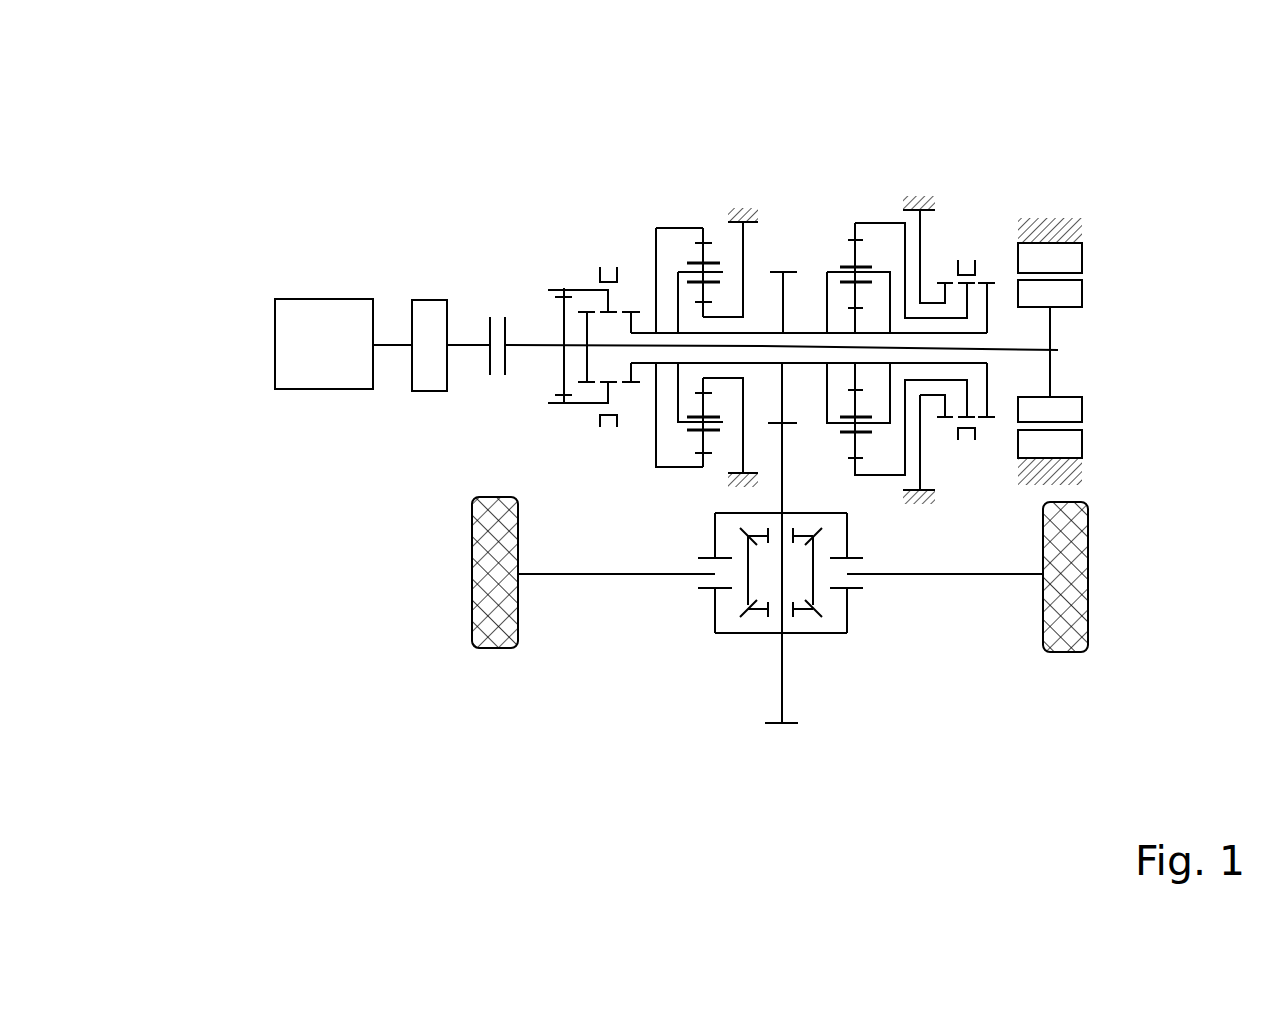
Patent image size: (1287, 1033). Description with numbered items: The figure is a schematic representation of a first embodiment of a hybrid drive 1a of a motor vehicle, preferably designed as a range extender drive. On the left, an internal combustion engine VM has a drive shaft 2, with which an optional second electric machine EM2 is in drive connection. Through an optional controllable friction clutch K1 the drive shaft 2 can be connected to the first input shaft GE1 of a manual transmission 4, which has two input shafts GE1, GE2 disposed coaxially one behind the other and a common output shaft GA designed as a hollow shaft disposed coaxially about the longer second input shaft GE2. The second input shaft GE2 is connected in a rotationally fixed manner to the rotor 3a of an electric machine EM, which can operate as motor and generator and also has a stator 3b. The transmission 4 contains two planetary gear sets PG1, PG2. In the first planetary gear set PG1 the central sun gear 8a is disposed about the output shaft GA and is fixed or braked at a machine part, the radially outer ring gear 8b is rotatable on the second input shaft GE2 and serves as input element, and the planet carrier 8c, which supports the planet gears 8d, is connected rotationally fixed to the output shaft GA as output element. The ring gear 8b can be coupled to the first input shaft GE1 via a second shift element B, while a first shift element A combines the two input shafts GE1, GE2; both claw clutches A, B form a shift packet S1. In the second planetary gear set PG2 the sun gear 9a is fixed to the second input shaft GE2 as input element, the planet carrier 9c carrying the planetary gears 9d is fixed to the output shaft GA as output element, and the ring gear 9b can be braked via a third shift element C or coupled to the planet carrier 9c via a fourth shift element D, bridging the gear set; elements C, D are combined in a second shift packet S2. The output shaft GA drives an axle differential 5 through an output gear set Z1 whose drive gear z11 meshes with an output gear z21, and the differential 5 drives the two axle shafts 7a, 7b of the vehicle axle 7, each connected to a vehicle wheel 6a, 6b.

The hybrid drive 1a is at (273, 156).
The drive shaft 2 is at (386, 340).
The controllable friction clutch K1 is at (490, 317).
The first input shaft GE1 is at (527, 344).
The first shift element A is at (597, 253).
The second shift element B is at (619, 253).
The shift packet S1 is at (607, 442).
The first planetary gear set PG1 is at (667, 425).
The ring gear 8b is at (664, 228).
The planet gears 8d is at (697, 243).
The sun gear 8a is at (728, 380).
The planet carrier 8c is at (687, 422).
The manual transmission 4 is at (639, 168).
The output shaft GA is at (753, 331).
The drive gear z11 is at (790, 272).
The second planetary gear set PG2 is at (901, 425).
The ring gear 9b is at (890, 223).
The planetary gears 9d is at (850, 240).
The planet carrier 9c is at (832, 423).
The sun gear 9a is at (858, 367).
The second input shaft GE2 is at (1002, 348).
The third shift element C is at (955, 249).
The fourth shift element D is at (977, 249).
The second shift packet S2 is at (964, 456).
The electric machine EM is at (1104, 270).
The stator 3b is at (1083, 260).
The rotor 3a is at (1083, 290).
The output gear set Z1 is at (780, 806).
The output gear z21 is at (790, 727).
The axle differential 5 is at (735, 634).
The vehicle axle 7 is at (992, 582).
The axle shaft 7a is at (568, 576).
The axle shaft 7b is at (1007, 578).
The vehicle wheel 6a is at (493, 649).
The vehicle wheel 6b is at (1089, 525).
The internal combustion engine VM is at (312, 390).
The second electric machine EM2 is at (427, 392).